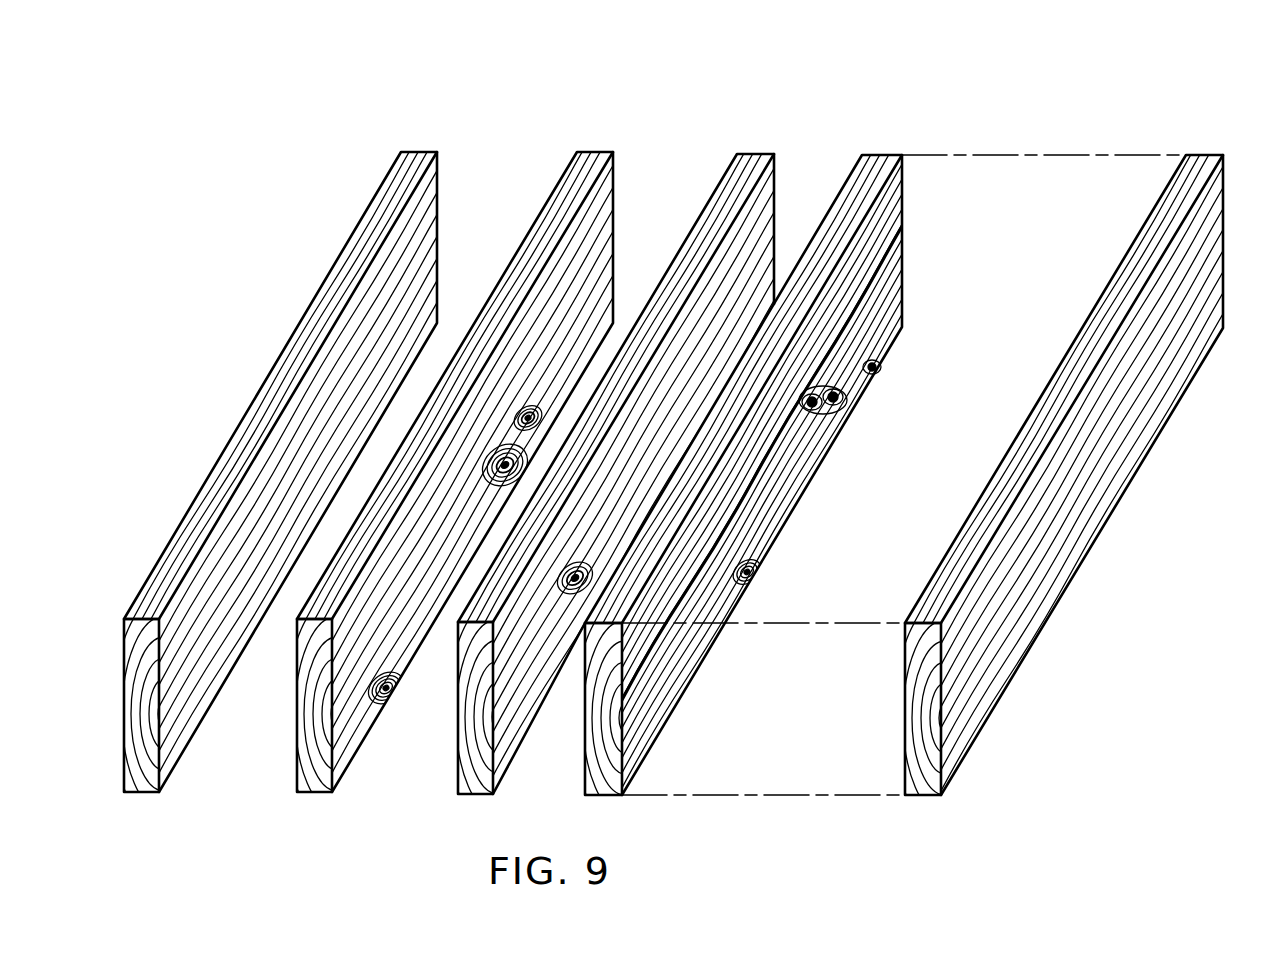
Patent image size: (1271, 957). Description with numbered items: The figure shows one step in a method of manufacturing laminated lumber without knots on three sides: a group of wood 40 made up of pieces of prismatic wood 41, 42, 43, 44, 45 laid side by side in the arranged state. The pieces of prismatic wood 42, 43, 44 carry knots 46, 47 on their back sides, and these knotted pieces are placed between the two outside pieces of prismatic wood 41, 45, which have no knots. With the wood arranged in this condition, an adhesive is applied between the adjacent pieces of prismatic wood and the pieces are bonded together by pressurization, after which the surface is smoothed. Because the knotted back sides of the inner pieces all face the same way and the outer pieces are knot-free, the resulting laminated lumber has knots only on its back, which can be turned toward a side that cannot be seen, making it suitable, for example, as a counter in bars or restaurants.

The group of wood 40 is at (281, 124).
The prismatic wood 41 is at (424, 151).
The prismatic wood 42 is at (598, 151).
The prismatic wood 43 is at (758, 153).
The prismatic wood 44 is at (884, 154).
The prismatic wood 45 is at (1208, 154).
The knot 46 is at (560, 410).
The knot 47 is at (388, 692).